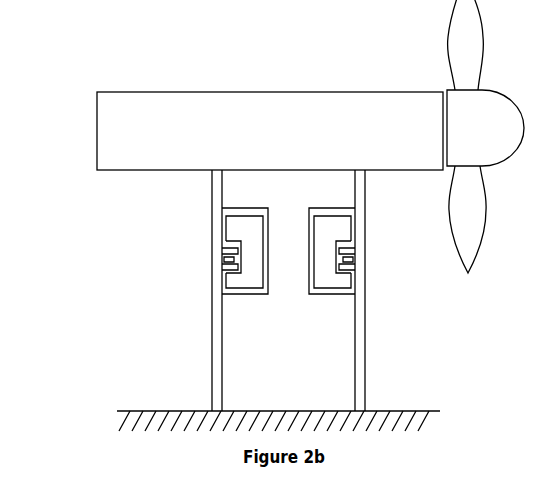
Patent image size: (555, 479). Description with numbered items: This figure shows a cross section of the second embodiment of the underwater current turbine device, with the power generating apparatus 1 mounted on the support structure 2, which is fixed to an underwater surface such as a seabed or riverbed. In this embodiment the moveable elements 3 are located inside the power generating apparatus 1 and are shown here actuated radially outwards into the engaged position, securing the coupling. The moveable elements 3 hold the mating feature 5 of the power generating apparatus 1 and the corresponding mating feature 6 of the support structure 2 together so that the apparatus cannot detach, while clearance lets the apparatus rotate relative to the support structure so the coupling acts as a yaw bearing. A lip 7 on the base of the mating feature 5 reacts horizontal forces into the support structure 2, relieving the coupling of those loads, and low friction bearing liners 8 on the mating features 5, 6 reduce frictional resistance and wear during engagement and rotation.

The power generating apparatus 1 is at (113, 123).
The support structure 2 is at (219, 363).
The moveable elements 3 is at (248, 235).
The mating feature 5 is at (229, 251).
The mating feature 6 is at (231, 268).
The lip 7 is at (222, 262).
The low friction bearing liners 8 is at (343, 248).